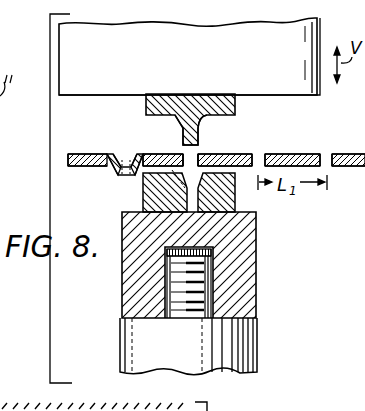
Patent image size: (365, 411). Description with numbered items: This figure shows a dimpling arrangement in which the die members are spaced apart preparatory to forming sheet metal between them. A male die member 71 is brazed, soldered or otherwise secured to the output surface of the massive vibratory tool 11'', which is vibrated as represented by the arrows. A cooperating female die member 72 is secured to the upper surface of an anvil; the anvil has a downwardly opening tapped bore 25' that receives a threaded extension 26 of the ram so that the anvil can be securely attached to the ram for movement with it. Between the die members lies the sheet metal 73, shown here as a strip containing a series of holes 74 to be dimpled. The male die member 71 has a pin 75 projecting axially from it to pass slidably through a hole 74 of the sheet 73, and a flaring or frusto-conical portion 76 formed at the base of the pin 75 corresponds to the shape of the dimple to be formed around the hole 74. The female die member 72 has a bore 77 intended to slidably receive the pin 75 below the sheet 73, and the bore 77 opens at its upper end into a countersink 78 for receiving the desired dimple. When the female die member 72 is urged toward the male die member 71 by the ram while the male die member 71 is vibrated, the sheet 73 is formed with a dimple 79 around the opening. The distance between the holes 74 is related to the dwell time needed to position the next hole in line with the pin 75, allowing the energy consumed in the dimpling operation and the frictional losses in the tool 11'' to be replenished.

The tool 11'' is at (212, 48).
The male die member 71 is at (237, 104).
The female die member 72 is at (237, 199).
The sheet metal 73 is at (340, 154).
The hole 74 is at (176, 133).
The pin 75 is at (198, 138).
The frusto-conical portion 76 is at (208, 118).
The bore 77 is at (185, 198).
The countersink 78 is at (180, 156).
The dimple 79 is at (117, 153).
The tapped bore 25' is at (231, 276).
The threaded extension 26 is at (213, 291).